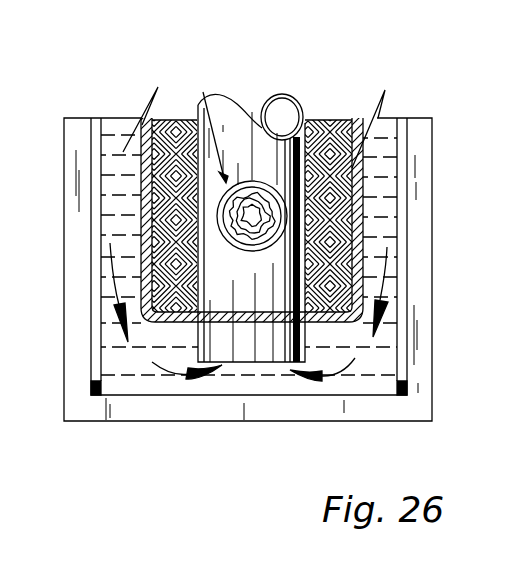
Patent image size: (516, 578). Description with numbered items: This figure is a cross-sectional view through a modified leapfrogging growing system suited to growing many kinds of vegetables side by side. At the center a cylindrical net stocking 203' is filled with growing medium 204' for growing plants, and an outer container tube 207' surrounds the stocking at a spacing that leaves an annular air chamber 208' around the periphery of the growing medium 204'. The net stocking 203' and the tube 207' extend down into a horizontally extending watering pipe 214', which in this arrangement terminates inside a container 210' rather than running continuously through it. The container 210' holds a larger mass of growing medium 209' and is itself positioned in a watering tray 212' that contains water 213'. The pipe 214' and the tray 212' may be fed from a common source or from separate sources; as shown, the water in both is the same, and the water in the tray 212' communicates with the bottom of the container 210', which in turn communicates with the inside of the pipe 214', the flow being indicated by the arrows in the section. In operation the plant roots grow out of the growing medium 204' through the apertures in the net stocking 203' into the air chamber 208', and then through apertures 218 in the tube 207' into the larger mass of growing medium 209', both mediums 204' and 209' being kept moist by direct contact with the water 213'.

The watering tray 212' is at (227, 260).
The water 213' is at (198, 289).
The container 210' is at (214, 203).
The larger mass of growing medium 209' is at (148, 188).
The cylindrical net stocking 203' is at (345, 201).
The annular air chamber 208' is at (251, 216).
The horizontally extending watering pipe 214' is at (260, 80).
The growing medium 204' is at (312, 131).
The outer container tube 207' is at (277, 154).
The material ball 218 is at (228, 213).